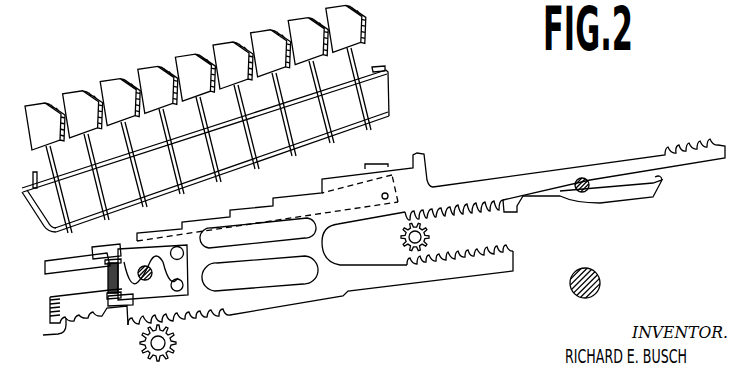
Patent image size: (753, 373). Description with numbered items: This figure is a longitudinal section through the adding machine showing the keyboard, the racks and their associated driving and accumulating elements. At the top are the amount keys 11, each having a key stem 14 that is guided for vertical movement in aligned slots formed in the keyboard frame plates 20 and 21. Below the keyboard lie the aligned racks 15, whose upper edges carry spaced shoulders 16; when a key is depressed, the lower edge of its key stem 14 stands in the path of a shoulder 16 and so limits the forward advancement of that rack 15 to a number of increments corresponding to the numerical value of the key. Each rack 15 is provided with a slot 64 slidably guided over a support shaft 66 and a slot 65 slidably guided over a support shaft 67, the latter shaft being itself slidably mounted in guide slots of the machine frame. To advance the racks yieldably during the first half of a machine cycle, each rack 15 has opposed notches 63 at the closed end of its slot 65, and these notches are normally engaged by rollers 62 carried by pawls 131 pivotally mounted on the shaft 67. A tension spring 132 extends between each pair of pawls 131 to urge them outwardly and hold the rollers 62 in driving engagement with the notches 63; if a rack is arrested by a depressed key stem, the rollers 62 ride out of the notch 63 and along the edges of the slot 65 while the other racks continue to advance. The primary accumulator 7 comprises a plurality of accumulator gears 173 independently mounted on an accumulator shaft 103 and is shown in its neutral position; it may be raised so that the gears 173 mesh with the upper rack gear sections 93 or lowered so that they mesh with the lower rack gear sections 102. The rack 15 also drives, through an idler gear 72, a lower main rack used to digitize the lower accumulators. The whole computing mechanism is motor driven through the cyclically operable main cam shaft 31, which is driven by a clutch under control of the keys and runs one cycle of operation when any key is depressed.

The amount key 11 is at (46, 106).
The key stem 14 is at (177, 164).
The keyboard frame plate 20 is at (312, 94).
The keyboard frame plate 21 is at (387, 128).
The shoulder 16 is at (322, 183).
The rack 15 is at (465, 187).
The support shaft 66 is at (577, 181).
The slot 64 is at (664, 182).
The upper rack gear section 93 is at (469, 208).
The rack gear section 102 is at (500, 260).
The primary accumulator 7 is at (441, 233).
The accumulator shaft 103 is at (403, 237).
The accumulator gear 173 is at (402, 243).
The notch 63 is at (204, 248).
The roller 62 is at (214, 272).
The support shaft 67 is at (149, 284).
The pawl 131 is at (112, 247).
The tension spring 132 is at (106, 279).
The slot 65 is at (46, 272).
The idler gear 72 is at (177, 344).
The main cam shaft 31 is at (596, 276).